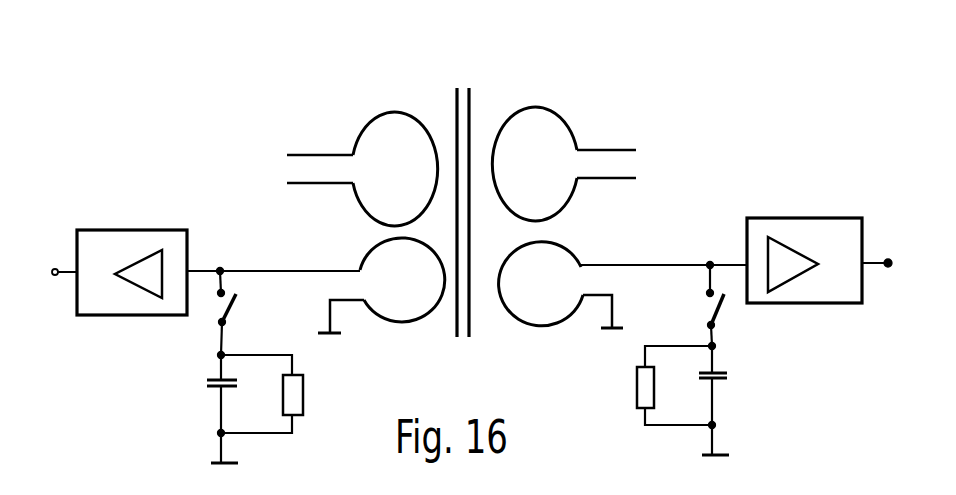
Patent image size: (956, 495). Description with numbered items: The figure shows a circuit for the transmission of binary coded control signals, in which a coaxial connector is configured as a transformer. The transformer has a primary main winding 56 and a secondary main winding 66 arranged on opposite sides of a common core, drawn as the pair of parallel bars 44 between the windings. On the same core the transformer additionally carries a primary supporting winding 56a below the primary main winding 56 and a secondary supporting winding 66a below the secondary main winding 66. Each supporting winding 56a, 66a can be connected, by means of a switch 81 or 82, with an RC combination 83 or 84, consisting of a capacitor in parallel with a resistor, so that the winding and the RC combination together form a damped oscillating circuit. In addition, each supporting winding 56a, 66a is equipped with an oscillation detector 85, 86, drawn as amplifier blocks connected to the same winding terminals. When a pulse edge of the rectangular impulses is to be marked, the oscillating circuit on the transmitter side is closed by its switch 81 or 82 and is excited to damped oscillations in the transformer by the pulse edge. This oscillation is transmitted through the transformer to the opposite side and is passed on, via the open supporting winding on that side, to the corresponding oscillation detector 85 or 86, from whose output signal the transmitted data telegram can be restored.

The transformer core / isolation barrier 44 is at (499, 97).
The primary main winding 56 is at (378, 110).
The primary supporting winding 56a is at (400, 324).
The secondary main winding 66 is at (567, 126).
The secondary supporting winding 66a is at (543, 326).
The switch 81 is at (240, 310).
The switch 82 is at (720, 312).
The RC combination 83 is at (210, 401).
The RC combination 84 is at (730, 398).
The oscillation detector 85 is at (122, 240).
The oscillation detector 86 is at (810, 228).